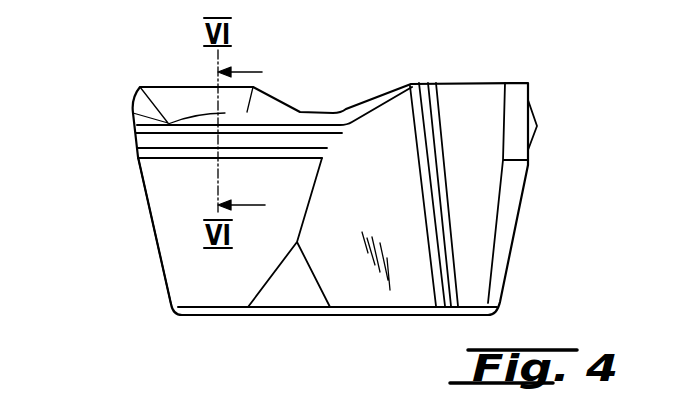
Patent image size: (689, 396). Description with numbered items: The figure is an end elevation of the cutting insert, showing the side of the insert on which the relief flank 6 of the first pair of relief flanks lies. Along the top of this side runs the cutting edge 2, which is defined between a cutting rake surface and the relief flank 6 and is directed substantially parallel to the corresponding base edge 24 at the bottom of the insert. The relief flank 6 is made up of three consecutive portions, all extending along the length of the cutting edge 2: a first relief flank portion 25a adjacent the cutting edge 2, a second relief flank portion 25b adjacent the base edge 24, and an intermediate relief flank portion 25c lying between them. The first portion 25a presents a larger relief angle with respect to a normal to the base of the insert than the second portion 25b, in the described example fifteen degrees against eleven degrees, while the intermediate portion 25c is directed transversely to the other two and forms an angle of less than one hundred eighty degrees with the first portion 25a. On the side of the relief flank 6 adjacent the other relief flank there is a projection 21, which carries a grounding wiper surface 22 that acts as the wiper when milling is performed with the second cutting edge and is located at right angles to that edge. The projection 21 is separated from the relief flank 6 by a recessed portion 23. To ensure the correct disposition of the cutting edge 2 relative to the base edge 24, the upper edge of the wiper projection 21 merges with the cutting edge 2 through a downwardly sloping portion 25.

The cutting edge 2 is at (260, 122).
The relief flank 6 is at (230, 299).
The projection 21 is at (495, 236).
The grounding wiper surface 22 is at (481, 148).
The recessed portion 23 is at (425, 238).
The base edge 24 is at (200, 312).
The downwardly sloping portion 25 is at (378, 103).
The first relief flank portion 25a is at (143, 145).
The second relief flank portion 25b is at (167, 245).
The intermediate relief flank portion 25c is at (138, 155).